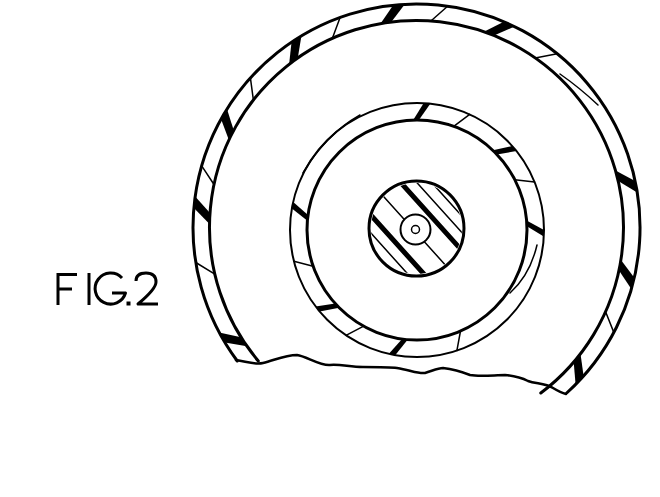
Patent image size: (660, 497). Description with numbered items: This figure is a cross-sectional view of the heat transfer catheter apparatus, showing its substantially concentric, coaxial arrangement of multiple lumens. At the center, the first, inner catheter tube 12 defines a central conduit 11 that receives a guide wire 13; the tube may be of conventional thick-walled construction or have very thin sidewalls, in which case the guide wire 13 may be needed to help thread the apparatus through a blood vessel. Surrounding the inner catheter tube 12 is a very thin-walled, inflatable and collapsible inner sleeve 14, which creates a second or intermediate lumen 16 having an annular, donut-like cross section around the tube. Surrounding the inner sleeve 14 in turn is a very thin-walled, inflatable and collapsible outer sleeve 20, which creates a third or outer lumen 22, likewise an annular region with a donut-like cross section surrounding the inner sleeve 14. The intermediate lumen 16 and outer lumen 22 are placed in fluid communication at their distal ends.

The central conduit 11 is at (427, 222).
The inner catheter tube 12 is at (440, 193).
The guide wire 13 is at (449, 249).
The inner sleeve 14 is at (297, 223).
The intermediate lumen 16 is at (389, 176).
The outer sleeve 20 is at (195, 206).
The outer lumen 22 is at (299, 126).